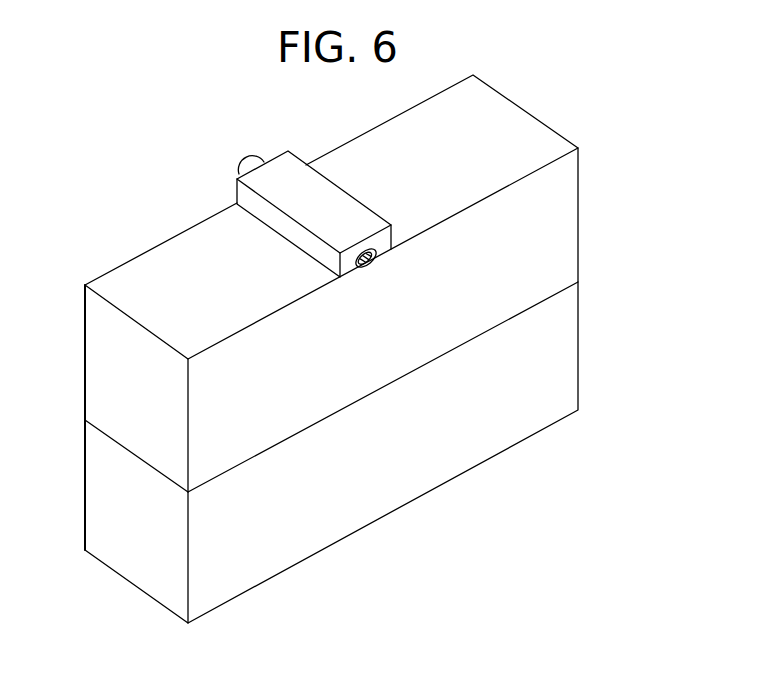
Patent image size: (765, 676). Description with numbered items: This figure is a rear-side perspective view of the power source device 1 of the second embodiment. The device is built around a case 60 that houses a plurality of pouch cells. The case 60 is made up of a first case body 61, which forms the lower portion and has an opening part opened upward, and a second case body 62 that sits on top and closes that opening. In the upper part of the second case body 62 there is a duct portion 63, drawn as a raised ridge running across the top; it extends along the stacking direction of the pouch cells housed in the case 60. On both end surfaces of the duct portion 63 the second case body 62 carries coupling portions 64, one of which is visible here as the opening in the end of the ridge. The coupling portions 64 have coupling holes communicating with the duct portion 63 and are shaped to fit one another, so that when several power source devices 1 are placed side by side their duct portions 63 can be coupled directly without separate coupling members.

The power source device 1 is at (610, 531).
The case 60 is at (677, 162).
The first case body 61 is at (562, 338).
The second case body 62 is at (560, 232).
The duct portion 63 is at (307, 180).
The coupling portion 64 is at (258, 158).